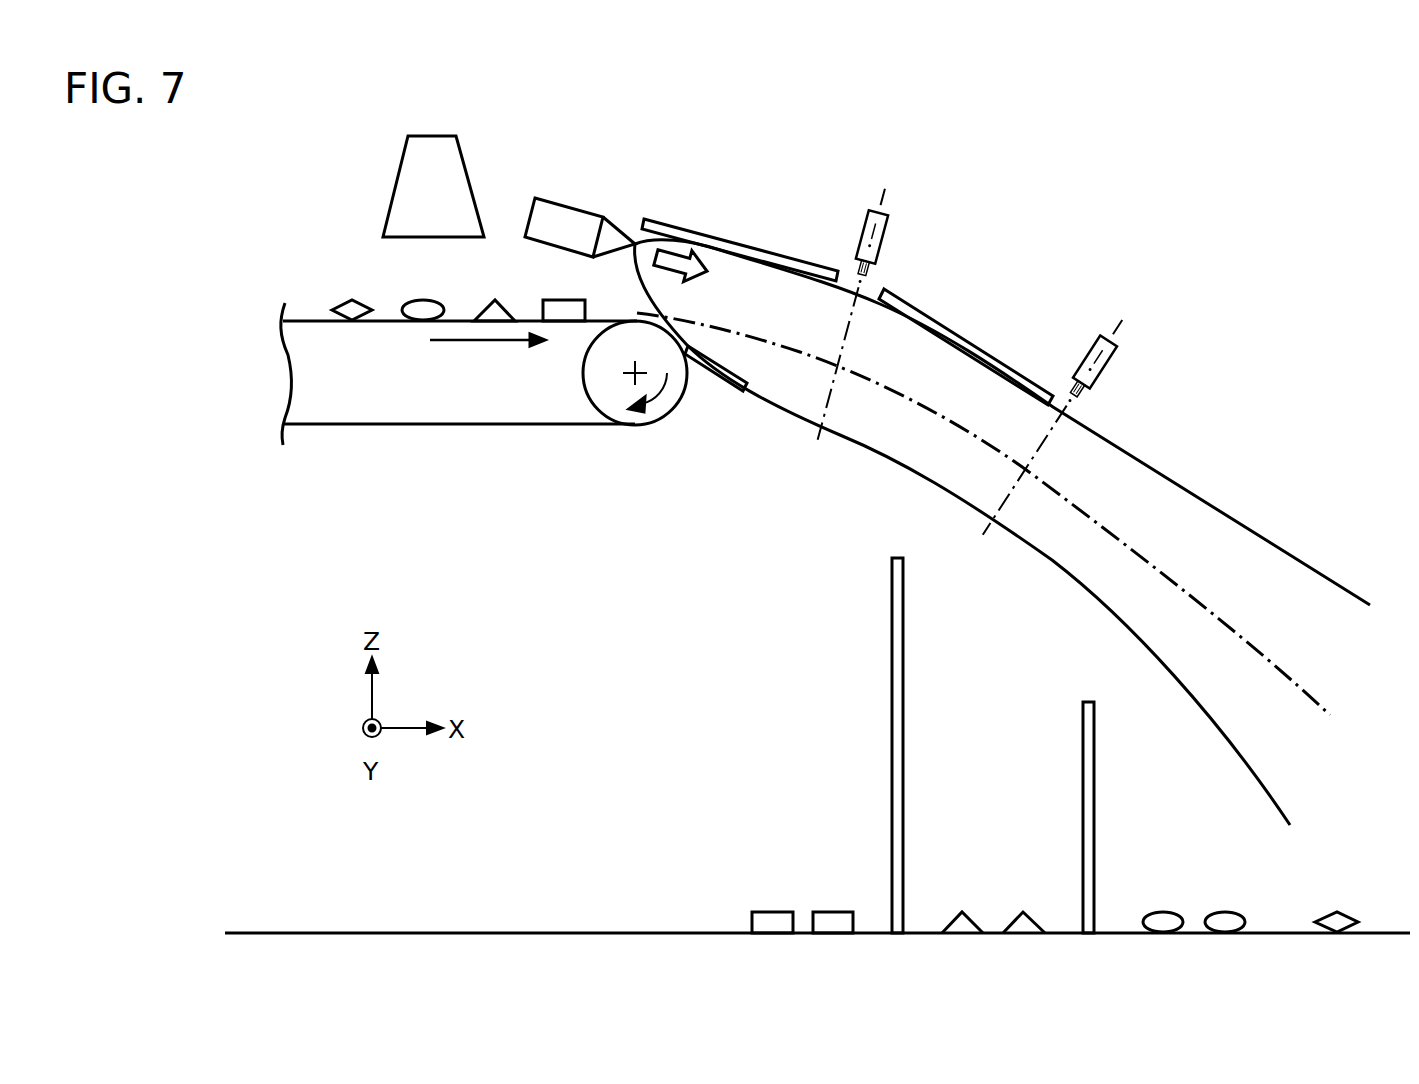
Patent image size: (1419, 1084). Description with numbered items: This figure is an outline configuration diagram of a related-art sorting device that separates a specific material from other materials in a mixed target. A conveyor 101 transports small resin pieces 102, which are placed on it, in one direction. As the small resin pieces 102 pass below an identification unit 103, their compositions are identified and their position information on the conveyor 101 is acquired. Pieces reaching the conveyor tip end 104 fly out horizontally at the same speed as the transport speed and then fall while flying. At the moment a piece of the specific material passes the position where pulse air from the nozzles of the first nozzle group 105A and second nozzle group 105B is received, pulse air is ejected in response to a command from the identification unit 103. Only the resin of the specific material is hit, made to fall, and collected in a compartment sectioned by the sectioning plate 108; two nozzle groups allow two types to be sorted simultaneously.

The conveyor 101 is at (297, 318).
The small resin pieces 102 is at (563, 312).
The identification unit 103 is at (450, 162).
The conveyor tip end 104 is at (633, 323).
The first nozzle group 105A is at (890, 203).
The second nozzle group 105B is at (1117, 333).
The sectioning plate 108 is at (1083, 777).